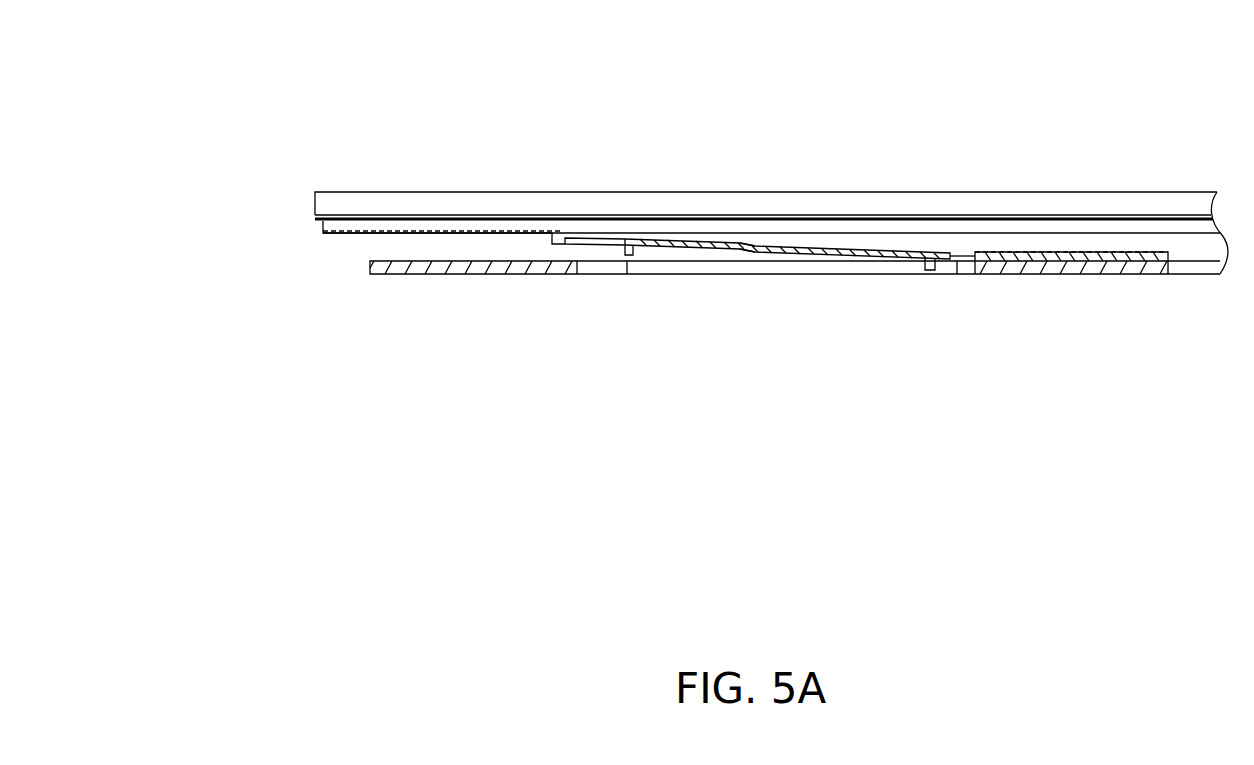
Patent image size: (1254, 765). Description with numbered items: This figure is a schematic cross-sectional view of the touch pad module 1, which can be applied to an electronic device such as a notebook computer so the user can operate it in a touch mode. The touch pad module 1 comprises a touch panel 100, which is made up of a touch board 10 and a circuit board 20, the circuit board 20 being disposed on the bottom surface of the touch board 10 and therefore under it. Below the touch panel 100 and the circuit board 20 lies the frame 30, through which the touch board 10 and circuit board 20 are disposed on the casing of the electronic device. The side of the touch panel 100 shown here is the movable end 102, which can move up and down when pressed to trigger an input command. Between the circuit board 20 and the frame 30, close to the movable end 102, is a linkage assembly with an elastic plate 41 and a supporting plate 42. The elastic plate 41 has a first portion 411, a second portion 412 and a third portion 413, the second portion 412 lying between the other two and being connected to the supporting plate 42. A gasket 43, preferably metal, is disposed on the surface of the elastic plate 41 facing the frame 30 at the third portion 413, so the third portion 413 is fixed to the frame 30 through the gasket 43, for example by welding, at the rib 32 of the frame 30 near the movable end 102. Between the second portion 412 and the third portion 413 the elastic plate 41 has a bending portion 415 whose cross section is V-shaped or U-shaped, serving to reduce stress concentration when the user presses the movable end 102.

The touch pad module 1 is at (410, 101).
The movable end 102 is at (433, 178).
The touch panel 100 is at (252, 145).
The touch board 10 is at (340, 207).
The circuit board 20 is at (345, 233).
The frame 30 is at (775, 298).
The rib 32 is at (1003, 270).
The elastic plate 41 is at (722, 244).
The first portion 411 is at (508, 234).
The second portion 412 is at (740, 250).
The third portion 413 is at (1055, 262).
The bending portion 415 is at (935, 266).
The supporting plate 42 is at (688, 252).
The gasket 43 is at (1157, 262).